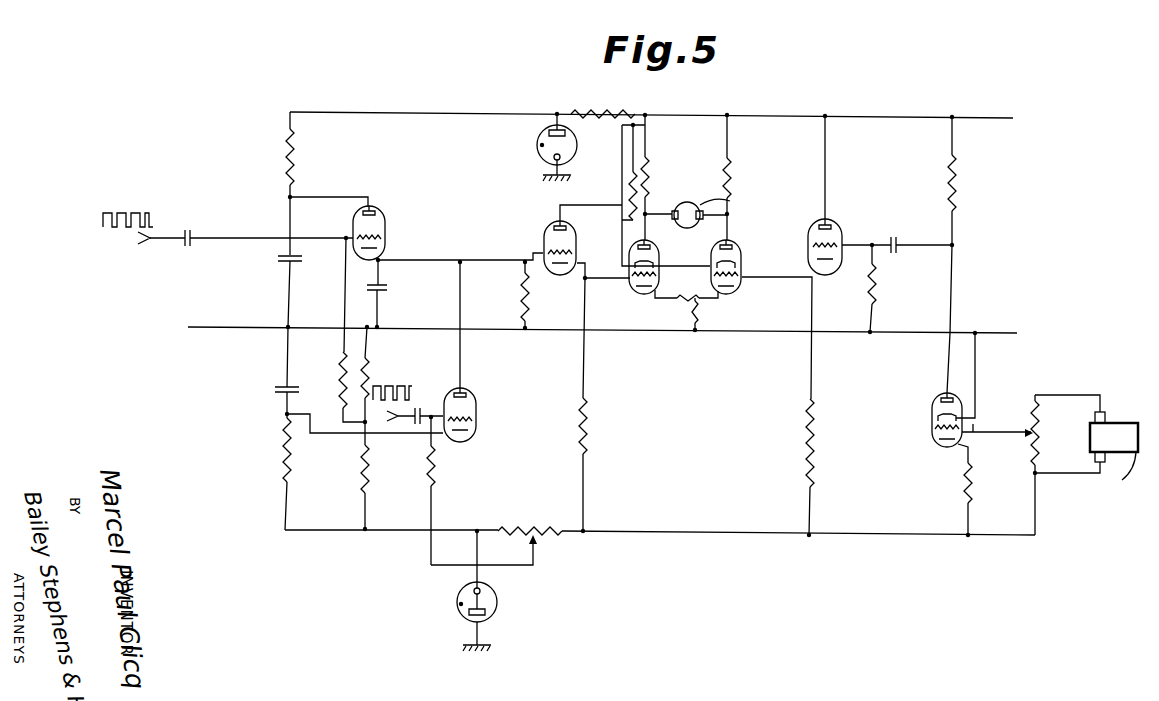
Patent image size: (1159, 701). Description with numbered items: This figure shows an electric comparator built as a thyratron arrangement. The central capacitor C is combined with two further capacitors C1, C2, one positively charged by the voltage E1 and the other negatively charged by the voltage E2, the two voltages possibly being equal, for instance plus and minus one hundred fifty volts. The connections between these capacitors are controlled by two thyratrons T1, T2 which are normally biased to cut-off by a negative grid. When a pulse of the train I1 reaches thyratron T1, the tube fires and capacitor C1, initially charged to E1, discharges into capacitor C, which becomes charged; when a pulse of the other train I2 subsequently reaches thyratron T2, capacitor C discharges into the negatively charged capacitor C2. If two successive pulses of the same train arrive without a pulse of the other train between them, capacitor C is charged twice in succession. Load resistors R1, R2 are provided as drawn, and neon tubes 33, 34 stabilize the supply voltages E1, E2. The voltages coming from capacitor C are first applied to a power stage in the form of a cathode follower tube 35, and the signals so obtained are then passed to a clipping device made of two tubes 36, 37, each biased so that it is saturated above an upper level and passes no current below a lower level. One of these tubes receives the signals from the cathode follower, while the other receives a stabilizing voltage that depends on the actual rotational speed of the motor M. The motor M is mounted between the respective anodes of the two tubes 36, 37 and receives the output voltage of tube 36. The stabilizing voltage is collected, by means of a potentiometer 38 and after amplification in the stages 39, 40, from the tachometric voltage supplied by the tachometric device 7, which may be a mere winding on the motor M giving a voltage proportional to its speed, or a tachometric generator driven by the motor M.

The tachometric device 7 is at (1120, 430).
The neon tube 33 is at (497, 597).
The neon tube 34 is at (537, 138).
The cathode follower tube 35 is at (545, 236).
The clipping tube 36 is at (660, 257).
The clipping tube 37 is at (745, 252).
The potentiometer 38 is at (1040, 437).
The amplifier tube 39 is at (933, 406).
The amplifier tube 40 is at (843, 237).
The motor M is at (720, 203).
The load resistor R1 is at (277, 157).
The load resistor R2 is at (274, 450).
The capacitor C is at (386, 290).
The capacitor C1 is at (276, 261).
The capacitor C2 is at (273, 393).
The thyratron T1 is at (380, 233).
The thyratron T2 is at (472, 415).
The pulse train I1 is at (128, 216).
The pulse train I2 is at (408, 391).
The positive supply voltage E1 is at (852, 108).
The negative supply voltage E2 is at (890, 549).